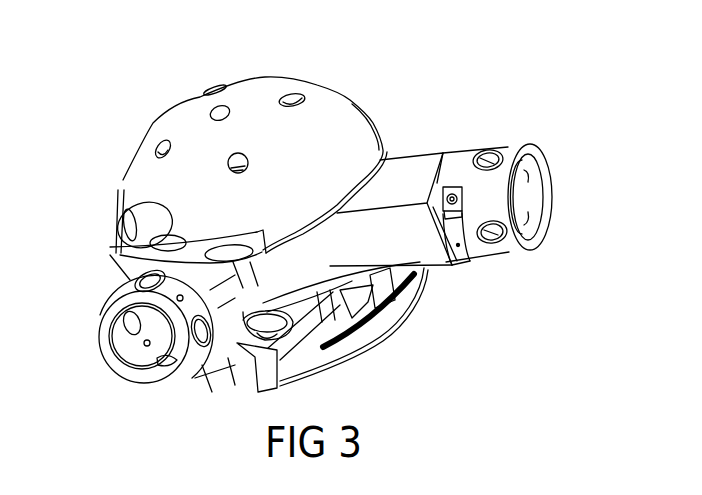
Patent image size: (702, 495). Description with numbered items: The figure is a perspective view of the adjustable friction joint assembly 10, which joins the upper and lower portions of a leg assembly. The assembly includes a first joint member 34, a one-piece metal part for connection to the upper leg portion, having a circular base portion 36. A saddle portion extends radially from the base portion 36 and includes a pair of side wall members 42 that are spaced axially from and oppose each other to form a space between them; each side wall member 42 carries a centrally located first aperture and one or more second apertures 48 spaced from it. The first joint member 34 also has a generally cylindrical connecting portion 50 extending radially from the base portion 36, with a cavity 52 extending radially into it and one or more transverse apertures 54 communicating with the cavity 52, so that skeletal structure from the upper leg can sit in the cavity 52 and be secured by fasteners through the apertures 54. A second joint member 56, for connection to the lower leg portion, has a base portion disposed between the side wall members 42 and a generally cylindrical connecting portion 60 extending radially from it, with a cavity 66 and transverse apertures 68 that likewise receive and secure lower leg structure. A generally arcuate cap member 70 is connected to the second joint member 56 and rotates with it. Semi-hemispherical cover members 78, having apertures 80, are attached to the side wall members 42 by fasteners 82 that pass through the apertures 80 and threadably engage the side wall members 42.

The adjustable friction joint assembly 10 is at (128, 111).
The first joint member 34 is at (106, 284).
The base portion 36 is at (208, 367).
The side wall members 42 is at (117, 242).
The second aperture 48 is at (123, 203).
The connecting portion 50 is at (197, 362).
The cavity 52 is at (138, 352).
The apertures 54 is at (112, 306).
The second joint member 56 is at (438, 145).
The connecting portion 60 is at (425, 250).
The cavity 66 is at (527, 197).
The apertures 68 is at (518, 147).
The cap member 70 is at (371, 92).
The cover member 78 is at (258, 82).
The apertures 80 is at (228, 158).
The fasteners 82 is at (227, 163).